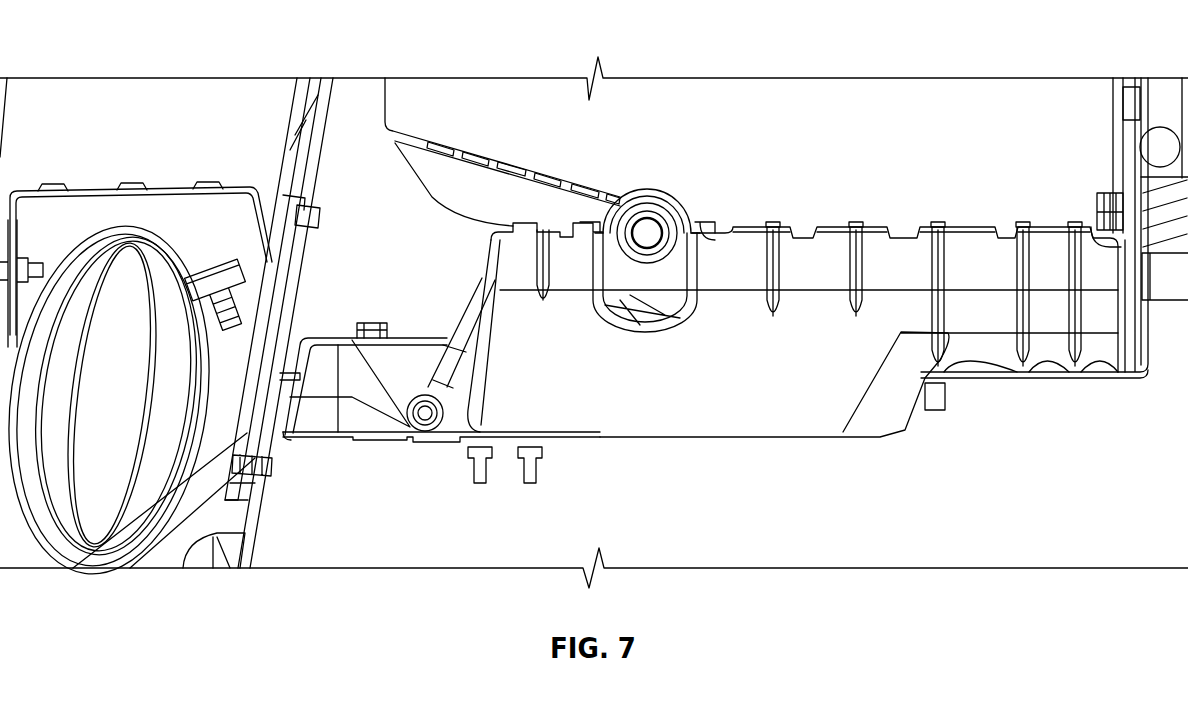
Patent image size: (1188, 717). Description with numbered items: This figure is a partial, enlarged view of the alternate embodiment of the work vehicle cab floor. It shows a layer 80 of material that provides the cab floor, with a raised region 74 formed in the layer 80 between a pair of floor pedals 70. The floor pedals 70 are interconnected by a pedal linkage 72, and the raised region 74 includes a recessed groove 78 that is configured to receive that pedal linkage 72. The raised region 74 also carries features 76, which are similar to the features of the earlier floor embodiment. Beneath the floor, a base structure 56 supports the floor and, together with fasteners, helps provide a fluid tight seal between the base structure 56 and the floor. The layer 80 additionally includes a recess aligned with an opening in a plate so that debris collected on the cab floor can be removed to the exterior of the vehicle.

The base structure 56 is at (300, 455).
The floor pedals 70 is at (410, 125).
The pedal linkage 72 is at (647, 203).
The raised region 74 is at (808, 257).
The features 76 is at (781, 253).
The recessed groove 78 is at (603, 307).
The layer 80 is at (358, 178).